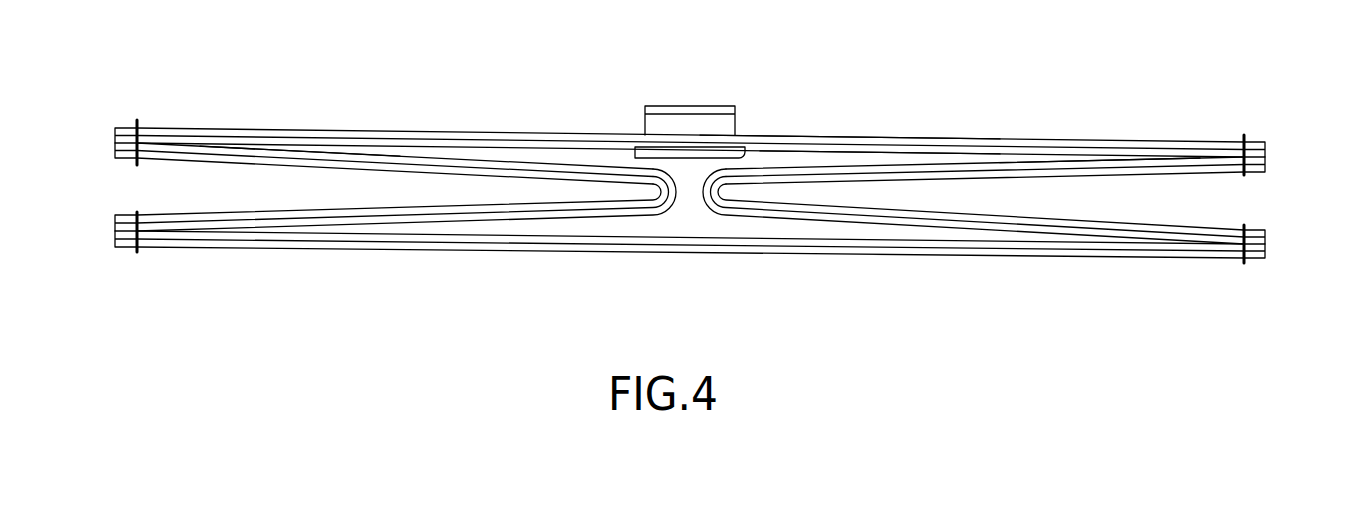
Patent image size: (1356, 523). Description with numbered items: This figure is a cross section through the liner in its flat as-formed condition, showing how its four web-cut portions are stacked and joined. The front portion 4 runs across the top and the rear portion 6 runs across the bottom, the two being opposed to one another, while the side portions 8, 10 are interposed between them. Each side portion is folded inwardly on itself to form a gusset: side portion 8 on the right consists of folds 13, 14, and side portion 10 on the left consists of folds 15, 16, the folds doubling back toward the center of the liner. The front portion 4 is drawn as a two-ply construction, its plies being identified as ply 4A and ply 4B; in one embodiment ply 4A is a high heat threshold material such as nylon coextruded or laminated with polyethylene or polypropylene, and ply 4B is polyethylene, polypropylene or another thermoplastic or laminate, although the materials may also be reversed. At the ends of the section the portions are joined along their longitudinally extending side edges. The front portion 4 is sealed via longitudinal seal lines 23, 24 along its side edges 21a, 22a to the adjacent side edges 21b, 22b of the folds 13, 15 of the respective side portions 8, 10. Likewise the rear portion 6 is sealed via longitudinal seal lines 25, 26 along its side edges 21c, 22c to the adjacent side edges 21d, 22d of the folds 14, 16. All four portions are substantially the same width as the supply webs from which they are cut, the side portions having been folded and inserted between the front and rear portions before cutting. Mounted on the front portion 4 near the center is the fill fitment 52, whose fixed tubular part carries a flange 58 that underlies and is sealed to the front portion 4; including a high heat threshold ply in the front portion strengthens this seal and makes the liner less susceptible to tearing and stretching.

The front portion 4 is at (442, 130).
The ply 4A is at (827, 137).
The ply 4B is at (902, 152).
The rear portion 6 is at (336, 250).
The side portion 8 is at (1047, 177).
The side portion 10 is at (210, 163).
The fold 13 is at (1125, 186).
The fold 14 is at (980, 205).
The fold 15 is at (266, 164).
The fold 16 is at (383, 210).
The side edge 21a is at (1265, 147).
The side edge 21b is at (1265, 164).
The side edge 21c is at (1265, 253).
The side edge 21d is at (1265, 236).
The side edge 22a is at (115, 133).
The side edge 22b is at (115, 150).
The side edge 22c is at (115, 240).
The side edge 22d is at (115, 222).
The longitudinal seal line 23 is at (1245, 140).
The longitudinal seal line 24 is at (136, 125).
The longitudinal seal line 25 is at (136, 252).
The longitudinal seal line 26 is at (1245, 265).
The fill fitment 52 is at (645, 105).
The flange 58 is at (748, 158).